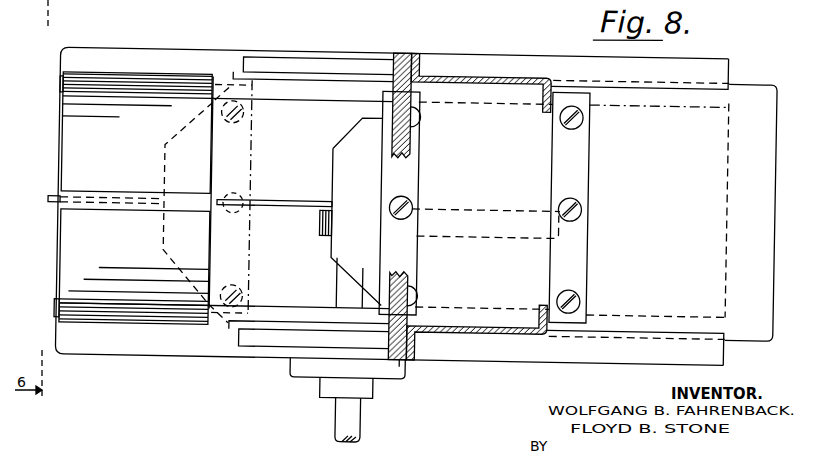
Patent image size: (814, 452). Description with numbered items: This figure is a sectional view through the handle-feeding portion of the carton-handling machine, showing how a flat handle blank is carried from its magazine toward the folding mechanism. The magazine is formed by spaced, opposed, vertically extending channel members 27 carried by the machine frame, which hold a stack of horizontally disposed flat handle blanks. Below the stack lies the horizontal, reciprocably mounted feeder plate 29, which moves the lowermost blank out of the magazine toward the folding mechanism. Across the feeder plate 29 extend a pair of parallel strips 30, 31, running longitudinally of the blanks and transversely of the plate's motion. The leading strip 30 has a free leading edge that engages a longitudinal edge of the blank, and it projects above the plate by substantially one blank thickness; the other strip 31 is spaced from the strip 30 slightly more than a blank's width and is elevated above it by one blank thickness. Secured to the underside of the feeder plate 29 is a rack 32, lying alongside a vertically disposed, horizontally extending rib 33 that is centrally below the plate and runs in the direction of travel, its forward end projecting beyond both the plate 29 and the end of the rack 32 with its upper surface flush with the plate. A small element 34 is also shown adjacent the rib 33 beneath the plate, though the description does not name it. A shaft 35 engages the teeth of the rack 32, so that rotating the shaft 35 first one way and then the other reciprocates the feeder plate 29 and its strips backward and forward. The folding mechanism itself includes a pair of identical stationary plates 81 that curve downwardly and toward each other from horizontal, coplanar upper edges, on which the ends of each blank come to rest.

The channel members 27 is at (482, 79).
The feeder plate 29 is at (362, 119).
The strip 30 is at (414, 163).
The strip 31 is at (584, 160).
The rack 32 is at (508, 236).
The rib 33 is at (295, 205).
The collar 34 is at (318, 230).
The shaft 35 is at (342, 412).
The stationary plates 81 is at (65, 158).